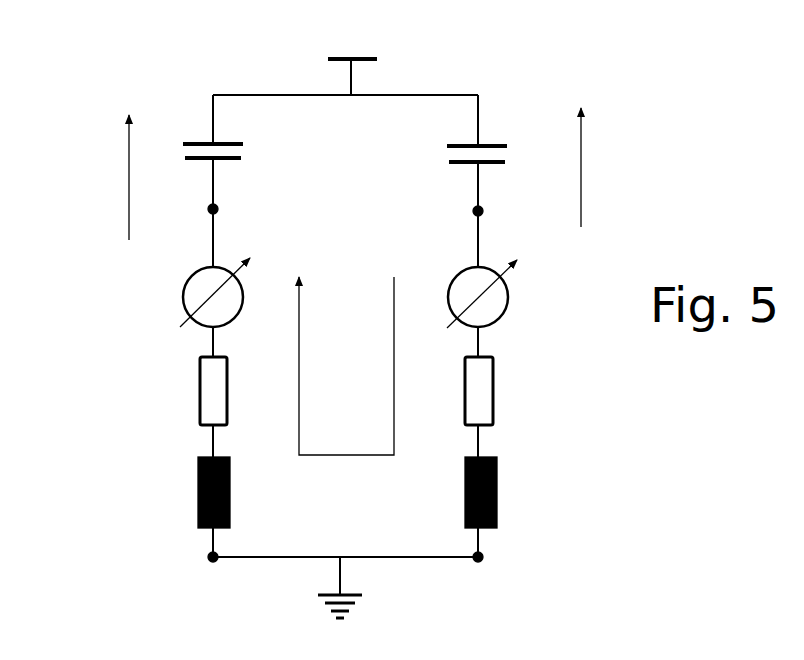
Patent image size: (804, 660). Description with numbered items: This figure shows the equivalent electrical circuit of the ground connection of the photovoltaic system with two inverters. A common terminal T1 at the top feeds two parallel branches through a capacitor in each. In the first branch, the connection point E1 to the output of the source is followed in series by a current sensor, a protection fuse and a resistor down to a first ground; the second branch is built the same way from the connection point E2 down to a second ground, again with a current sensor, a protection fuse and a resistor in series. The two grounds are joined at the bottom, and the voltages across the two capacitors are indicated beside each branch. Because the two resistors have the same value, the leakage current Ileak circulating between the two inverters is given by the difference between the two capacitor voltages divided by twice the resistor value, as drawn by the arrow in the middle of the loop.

The common terminal T1 = T2 T1 is at (383, 62).
The connection point E1 is at (208, 208).
The electrode node E2 is at (483, 210).
The leakage current Ileak is at (346, 366).